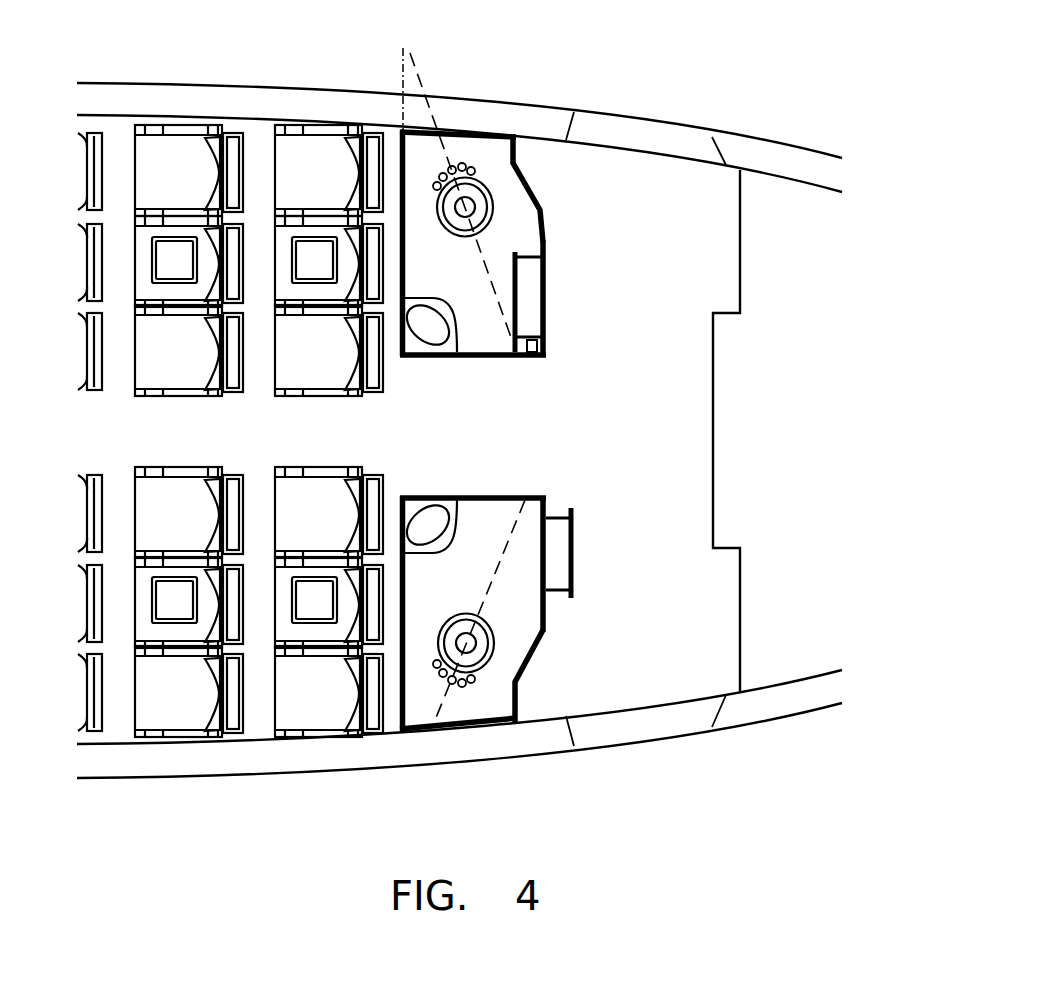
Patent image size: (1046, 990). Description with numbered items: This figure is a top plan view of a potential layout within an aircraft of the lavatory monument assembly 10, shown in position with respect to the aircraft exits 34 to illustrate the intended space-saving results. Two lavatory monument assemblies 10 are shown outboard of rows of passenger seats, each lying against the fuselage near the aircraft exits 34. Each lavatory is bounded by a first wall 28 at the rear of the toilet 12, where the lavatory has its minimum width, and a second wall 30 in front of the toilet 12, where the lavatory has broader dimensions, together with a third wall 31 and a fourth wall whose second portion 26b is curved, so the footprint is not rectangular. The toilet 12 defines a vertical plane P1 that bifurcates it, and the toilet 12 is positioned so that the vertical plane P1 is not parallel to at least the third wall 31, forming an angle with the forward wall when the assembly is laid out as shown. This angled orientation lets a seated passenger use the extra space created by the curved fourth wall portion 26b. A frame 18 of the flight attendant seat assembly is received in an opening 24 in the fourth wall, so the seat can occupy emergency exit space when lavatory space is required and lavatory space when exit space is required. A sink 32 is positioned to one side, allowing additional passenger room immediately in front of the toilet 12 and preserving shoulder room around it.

The aircraft lavatory monument assembly 10 is at (572, 182).
The toilet 12 is at (463, 176).
The frame 18 is at (532, 357).
The opening 24 is at (547, 250).
The second portion 26b is at (532, 200).
The first wall 28 is at (452, 170).
The second wall 30 is at (470, 358).
The third wall 31 is at (403, 185).
The sink 32 is at (428, 327).
The aircraft exits 34 is at (685, 137).
The vertical plane P1 is at (490, 263).